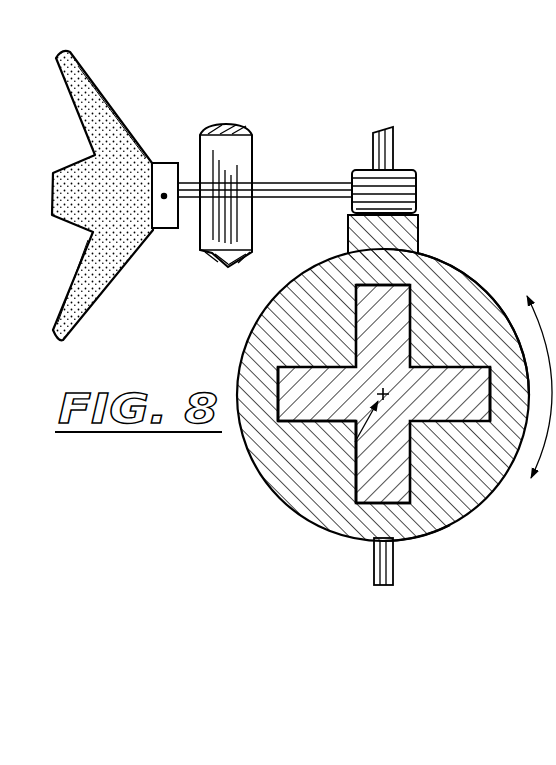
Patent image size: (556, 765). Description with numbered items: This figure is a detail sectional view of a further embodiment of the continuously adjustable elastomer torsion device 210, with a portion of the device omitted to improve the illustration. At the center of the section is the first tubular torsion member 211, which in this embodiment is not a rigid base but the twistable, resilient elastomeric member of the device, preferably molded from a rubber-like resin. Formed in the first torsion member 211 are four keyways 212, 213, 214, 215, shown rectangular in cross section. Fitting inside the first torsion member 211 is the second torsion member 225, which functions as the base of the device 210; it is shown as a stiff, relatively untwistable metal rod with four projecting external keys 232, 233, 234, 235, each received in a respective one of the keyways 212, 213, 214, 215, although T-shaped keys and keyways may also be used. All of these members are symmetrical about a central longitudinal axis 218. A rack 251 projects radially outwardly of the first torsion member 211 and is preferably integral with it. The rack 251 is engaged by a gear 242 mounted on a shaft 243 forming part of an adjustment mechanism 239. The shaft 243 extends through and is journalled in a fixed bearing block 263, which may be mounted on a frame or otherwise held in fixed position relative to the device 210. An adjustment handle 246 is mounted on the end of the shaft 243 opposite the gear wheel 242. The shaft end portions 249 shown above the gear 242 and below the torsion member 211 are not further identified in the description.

The continuously adjustable torsion device 210 is at (213, 375).
The first tubular torsion member 211 is at (480, 292).
The keyway 212 is at (423, 258).
The keyway 213 is at (508, 447).
The keyway 214 is at (393, 533).
The keyway 215 is at (272, 420).
The central longitudinal axis 218 is at (335, 497).
The second torsion member 225 is at (348, 356).
The external key 232 is at (340, 316).
The external key 233 is at (460, 500).
The external key 234 is at (330, 533).
The external key 235 is at (300, 445).
The adjustment mechanism 239 is at (192, 131).
The gear 242 is at (412, 177).
The shaft 243 is at (295, 185).
The adjustment handle 246 is at (120, 193).
The shaft end 249 is at (372, 138).
The rack 251 is at (420, 232).
The fixed bearing block 263 is at (238, 173).